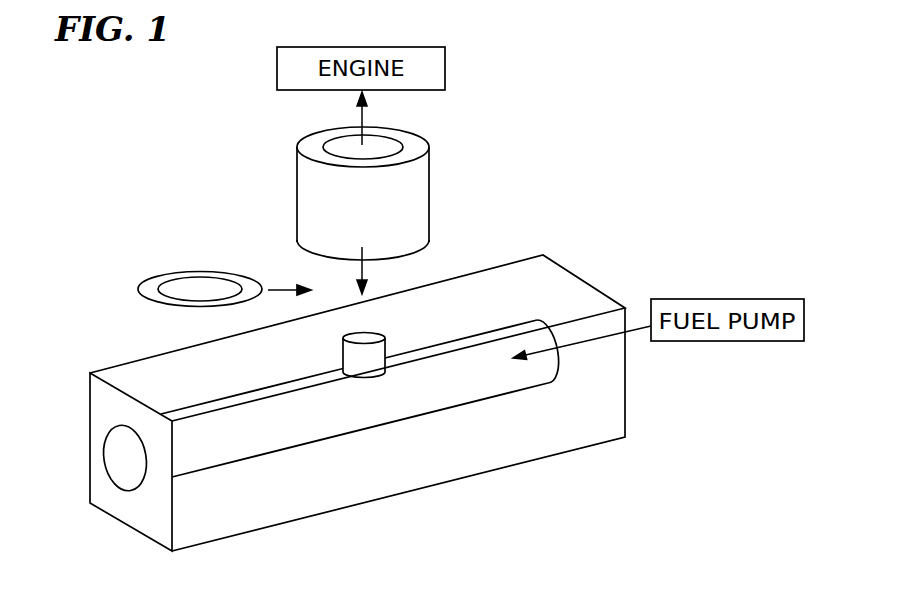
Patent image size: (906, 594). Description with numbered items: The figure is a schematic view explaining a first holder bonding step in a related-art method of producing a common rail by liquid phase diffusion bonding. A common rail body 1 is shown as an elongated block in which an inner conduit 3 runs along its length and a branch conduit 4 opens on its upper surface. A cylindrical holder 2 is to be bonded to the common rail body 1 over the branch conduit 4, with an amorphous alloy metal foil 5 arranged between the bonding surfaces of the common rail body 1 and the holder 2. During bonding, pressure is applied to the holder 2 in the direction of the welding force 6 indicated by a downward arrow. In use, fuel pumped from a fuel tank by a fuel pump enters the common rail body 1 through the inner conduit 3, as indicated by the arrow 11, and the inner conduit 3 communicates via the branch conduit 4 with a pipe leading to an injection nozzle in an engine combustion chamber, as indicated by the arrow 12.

The common rail body 1 is at (390, 465).
The holder 2 is at (355, 224).
The inner conduit 3 is at (123, 462).
The branch conduit 4 is at (343, 346).
The amorphous alloy metal foil 5 is at (140, 289).
The welding force 6 is at (361, 256).
The fuel flow from a fuel pump to a common rail 11 is at (640, 327).
The fuel flow from a common rail to an engine 12 is at (366, 118).